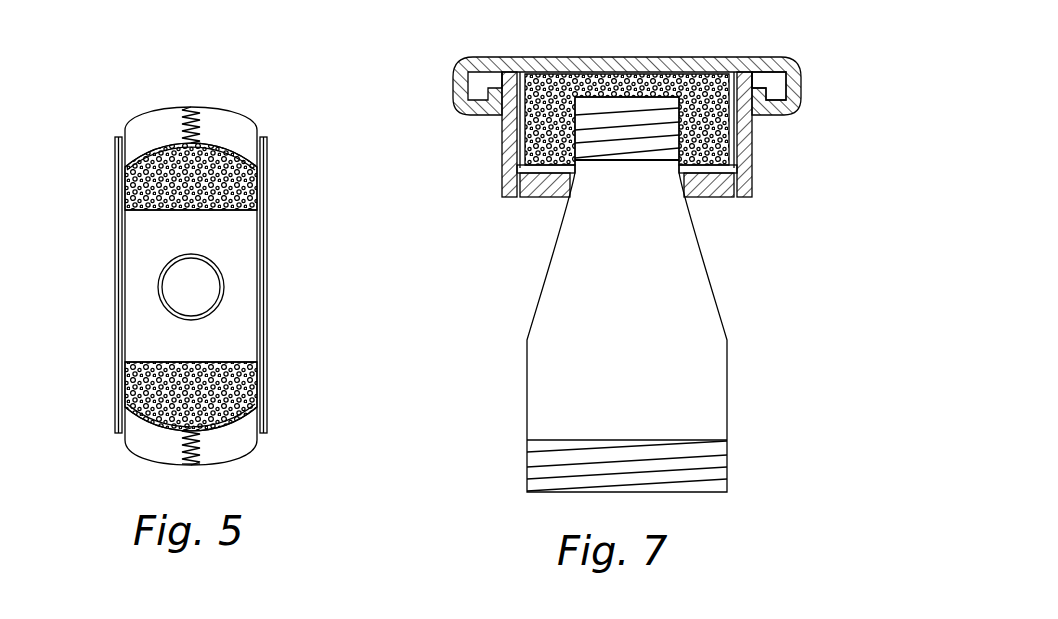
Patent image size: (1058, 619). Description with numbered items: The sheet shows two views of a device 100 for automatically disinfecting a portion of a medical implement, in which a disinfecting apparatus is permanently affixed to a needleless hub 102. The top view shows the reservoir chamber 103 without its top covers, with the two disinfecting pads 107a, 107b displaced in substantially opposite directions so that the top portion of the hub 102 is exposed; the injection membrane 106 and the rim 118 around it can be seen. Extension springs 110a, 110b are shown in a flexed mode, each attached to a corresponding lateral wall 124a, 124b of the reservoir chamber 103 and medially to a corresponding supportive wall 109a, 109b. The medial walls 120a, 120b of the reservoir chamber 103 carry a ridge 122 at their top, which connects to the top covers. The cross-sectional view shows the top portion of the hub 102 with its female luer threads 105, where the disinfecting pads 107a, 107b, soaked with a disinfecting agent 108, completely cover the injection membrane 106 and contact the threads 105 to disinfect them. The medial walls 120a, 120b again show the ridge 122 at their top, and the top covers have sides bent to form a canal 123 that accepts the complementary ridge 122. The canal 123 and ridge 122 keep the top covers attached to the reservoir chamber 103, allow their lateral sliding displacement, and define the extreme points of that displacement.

In FIG. 5, the device 100 is at (150, 261).
In FIG. 7, the device 100 is at (685, 294).
In FIG. 7, the needleless hub 102 is at (690, 274).
In FIG. 5, the reservoir chamber 103 is at (158, 342).
In FIG. 7, the reservoir chamber 103 is at (513, 198).
In FIG. 7, the female luer threads 105 is at (597, 150).
In FIG. 5, the injection membrane 106 is at (185, 287).
In FIG. 7, the injection membrane 106 is at (637, 97).
In FIG. 5, the disinfecting pad 107a is at (212, 390).
In FIG. 5, the disinfecting pad 107b is at (225, 186).
In FIG. 7, the disinfecting agent 108 is at (540, 195).
In FIG. 5, the supportive wall 109a is at (227, 423).
In FIG. 5, the supportive wall 109b is at (225, 147).
In FIG. 5, the extension spring 110a is at (183, 443).
In FIG. 5, the extension spring 110b is at (200, 128).
In FIG. 5, the rim 118 is at (132, 405).
In FIG. 5, the medial wall 120a is at (118, 273).
In FIG. 7, the medial wall 120a is at (502, 143).
In FIG. 5, the medial wall 120b is at (262, 305).
In FIG. 7, the medial wall 120b is at (752, 170).
In FIG. 5, the ridge 122 is at (118, 315).
In FIG. 7, the ridge 122 is at (495, 78).
In FIG. 7, the canal 123 is at (785, 92).
In FIG. 5, the lateral wall 124a is at (207, 466).
In FIG. 5, the lateral wall 124b is at (172, 105).